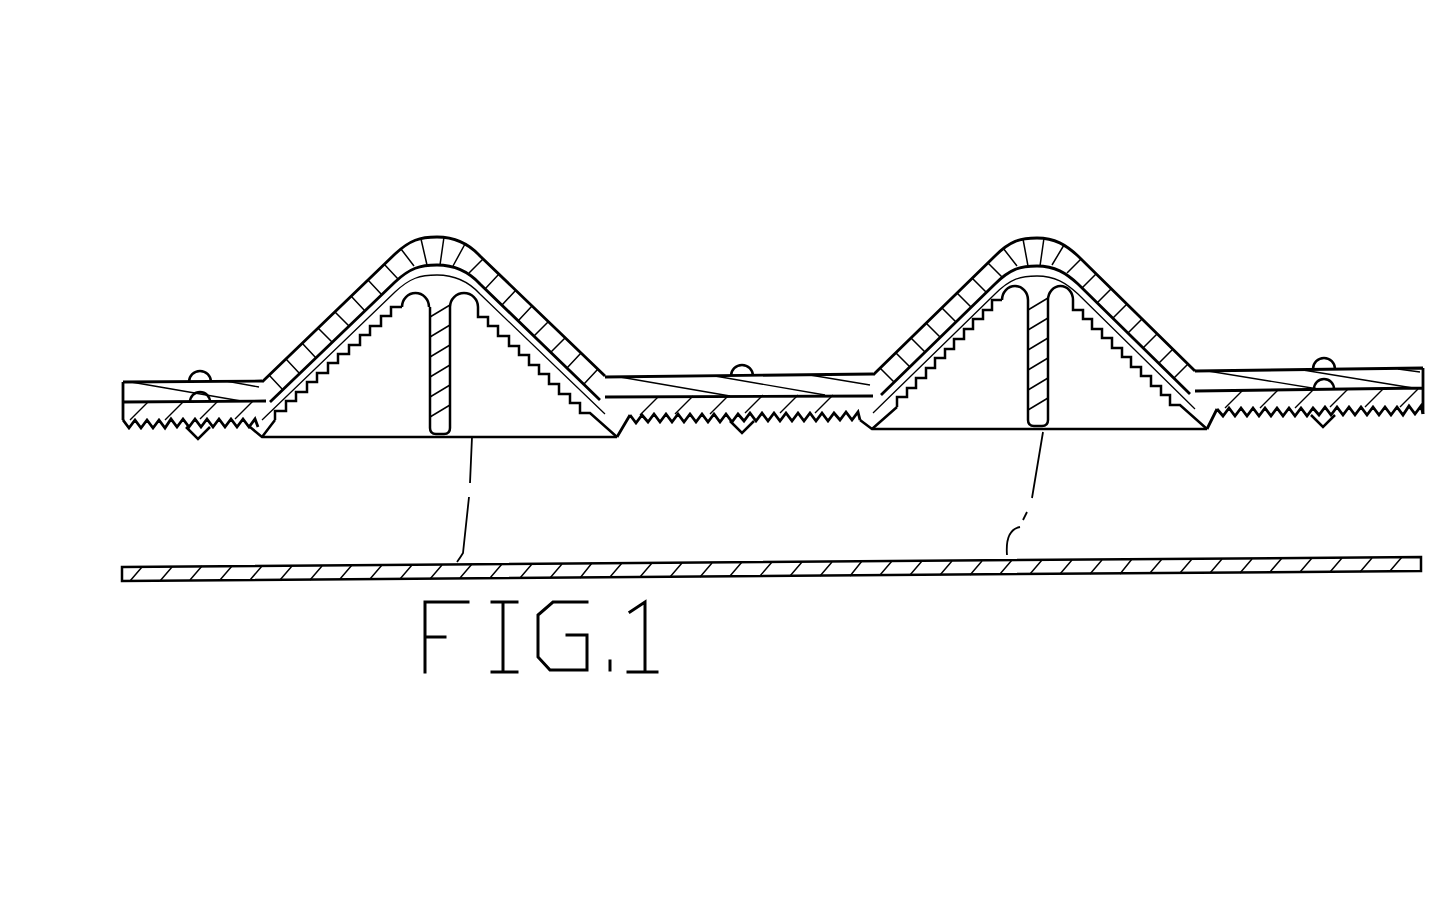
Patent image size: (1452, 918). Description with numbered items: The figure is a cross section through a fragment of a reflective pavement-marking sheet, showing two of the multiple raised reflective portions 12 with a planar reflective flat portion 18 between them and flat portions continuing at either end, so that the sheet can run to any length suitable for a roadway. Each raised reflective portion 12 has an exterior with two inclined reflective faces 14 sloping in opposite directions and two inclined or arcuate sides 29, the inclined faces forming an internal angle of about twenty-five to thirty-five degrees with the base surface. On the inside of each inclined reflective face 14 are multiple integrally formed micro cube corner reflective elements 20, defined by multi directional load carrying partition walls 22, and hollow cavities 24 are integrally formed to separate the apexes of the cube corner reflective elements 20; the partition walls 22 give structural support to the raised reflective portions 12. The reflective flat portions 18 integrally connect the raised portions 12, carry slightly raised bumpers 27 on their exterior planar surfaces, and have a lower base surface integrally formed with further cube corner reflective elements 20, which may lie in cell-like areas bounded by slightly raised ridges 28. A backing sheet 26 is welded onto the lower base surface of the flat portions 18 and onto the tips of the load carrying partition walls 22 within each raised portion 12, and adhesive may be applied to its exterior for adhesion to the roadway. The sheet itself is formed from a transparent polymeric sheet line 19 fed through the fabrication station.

The raised reflective portion 12 is at (714, 316).
The inclined reflective face 14 is at (330, 312).
The reflective flat portion 18 is at (630, 375).
The transparent sheet line 19 is at (1368, 377).
The micro cube corner reflective element 20 is at (308, 424).
The load carrying partition wall 22 is at (426, 404).
The hollow cavity 24 is at (515, 393).
The backing sheet 26 is at (1122, 572).
The raised bumper 27 is at (745, 367).
The raised ridge 28 is at (873, 431).
The inclined or arcuate side 29 is at (1087, 431).